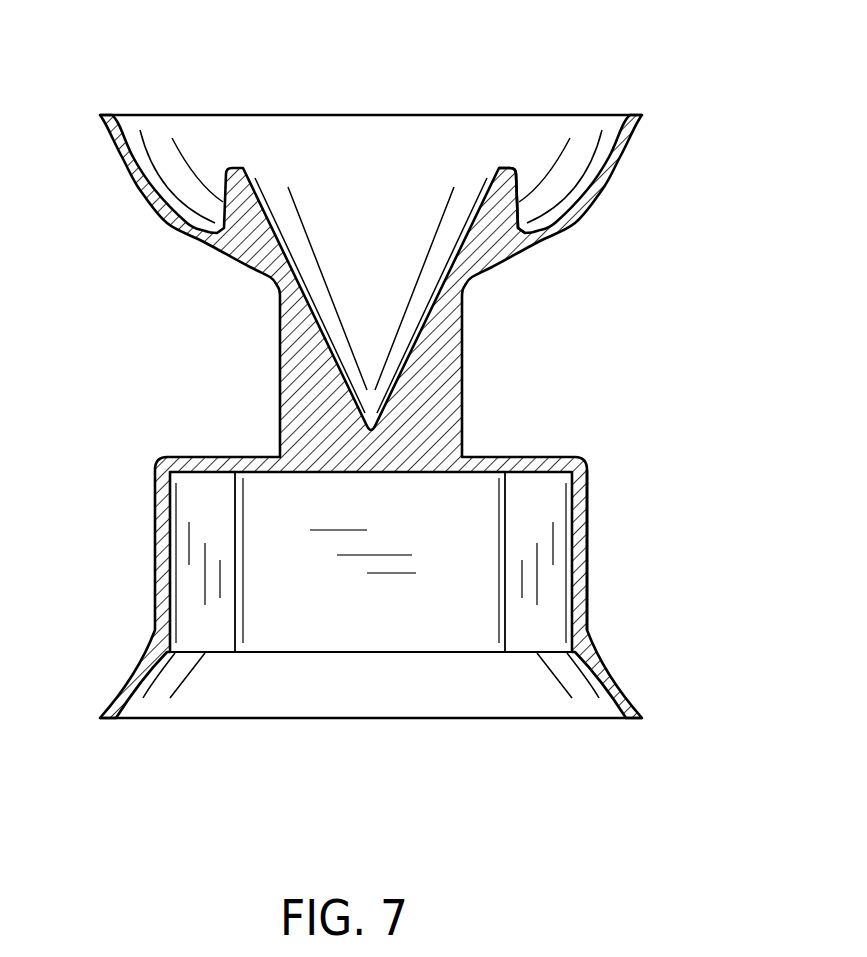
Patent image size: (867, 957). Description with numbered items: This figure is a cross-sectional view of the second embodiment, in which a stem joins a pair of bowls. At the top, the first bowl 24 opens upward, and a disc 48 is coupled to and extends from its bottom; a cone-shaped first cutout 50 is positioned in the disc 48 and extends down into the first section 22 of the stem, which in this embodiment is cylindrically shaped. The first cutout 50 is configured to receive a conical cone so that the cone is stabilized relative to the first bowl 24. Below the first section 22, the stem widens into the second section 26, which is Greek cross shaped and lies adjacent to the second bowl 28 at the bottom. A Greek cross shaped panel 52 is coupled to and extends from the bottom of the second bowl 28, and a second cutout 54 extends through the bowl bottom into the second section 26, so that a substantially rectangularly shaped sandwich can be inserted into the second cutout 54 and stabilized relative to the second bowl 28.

The first section 22 is at (462, 353).
The first bowl 24 is at (603, 185).
The second section 26 is at (587, 520).
The second bowl 28 is at (625, 682).
The disc 48 is at (520, 233).
The first cutout 50 is at (362, 243).
The panel 52 is at (587, 596).
The second cutout 54 is at (333, 537).